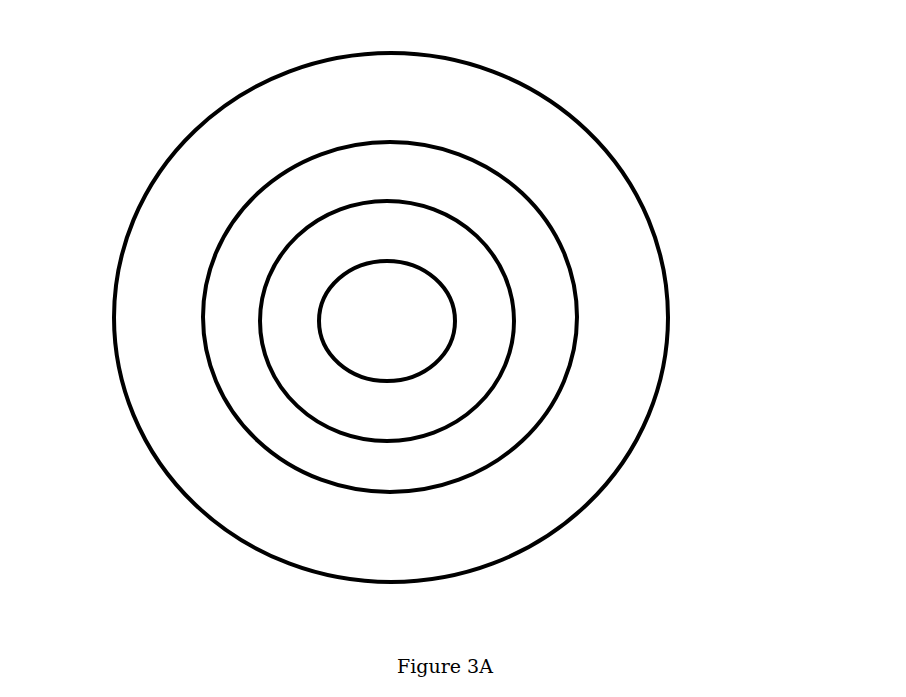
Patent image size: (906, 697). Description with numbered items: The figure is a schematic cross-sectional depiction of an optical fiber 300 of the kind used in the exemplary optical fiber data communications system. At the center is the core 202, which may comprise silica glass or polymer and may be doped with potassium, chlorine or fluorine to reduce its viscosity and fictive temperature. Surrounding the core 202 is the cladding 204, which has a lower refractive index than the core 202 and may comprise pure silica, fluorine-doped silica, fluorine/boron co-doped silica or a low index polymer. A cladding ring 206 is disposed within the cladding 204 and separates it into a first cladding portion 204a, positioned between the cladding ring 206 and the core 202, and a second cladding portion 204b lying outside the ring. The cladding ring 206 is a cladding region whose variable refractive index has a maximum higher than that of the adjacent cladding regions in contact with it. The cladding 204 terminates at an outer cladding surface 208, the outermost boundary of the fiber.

The optical fiber 300 is at (666, 59).
The core 202 is at (320, 337).
The cladding 204 is at (366, 109).
The first cladding portion 204a is at (488, 298).
The second cladding portion 204b is at (602, 167).
The cladding ring 206 is at (437, 167).
The outer cladding surface 208 is at (665, 255).